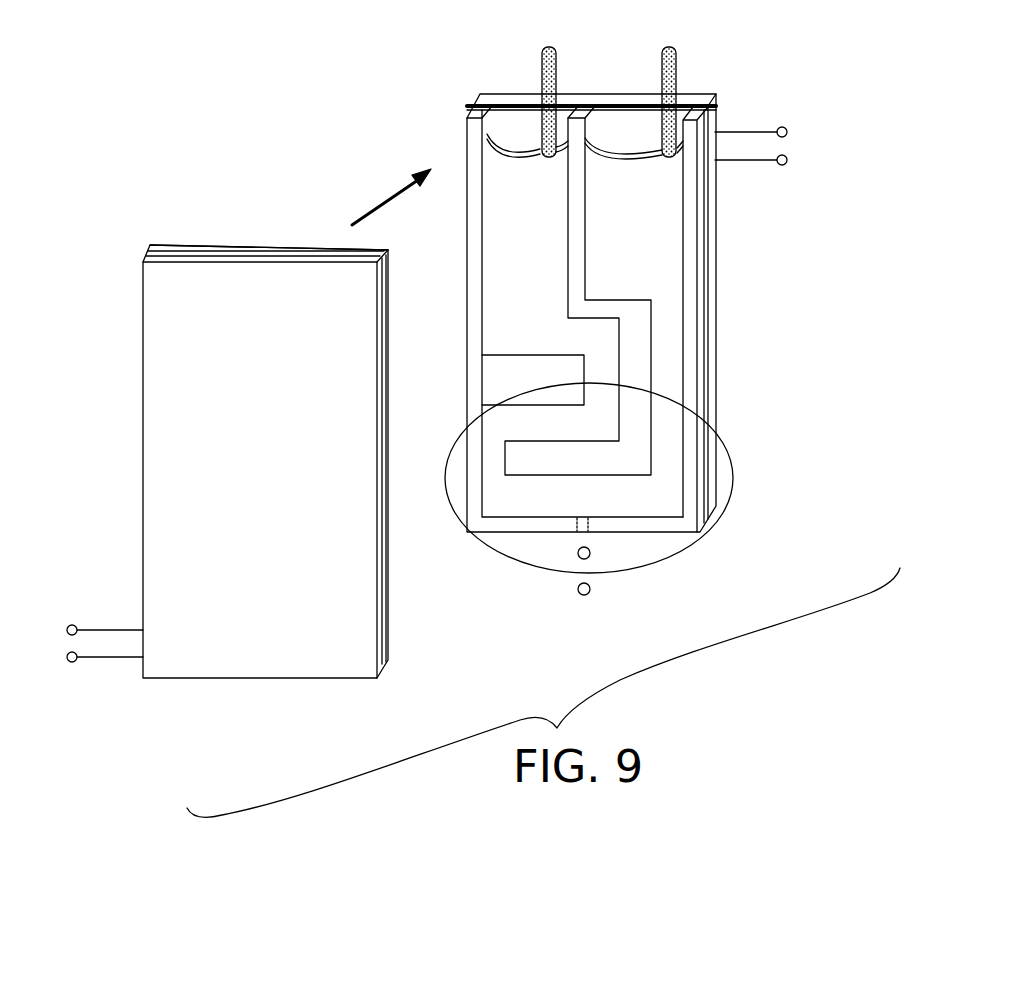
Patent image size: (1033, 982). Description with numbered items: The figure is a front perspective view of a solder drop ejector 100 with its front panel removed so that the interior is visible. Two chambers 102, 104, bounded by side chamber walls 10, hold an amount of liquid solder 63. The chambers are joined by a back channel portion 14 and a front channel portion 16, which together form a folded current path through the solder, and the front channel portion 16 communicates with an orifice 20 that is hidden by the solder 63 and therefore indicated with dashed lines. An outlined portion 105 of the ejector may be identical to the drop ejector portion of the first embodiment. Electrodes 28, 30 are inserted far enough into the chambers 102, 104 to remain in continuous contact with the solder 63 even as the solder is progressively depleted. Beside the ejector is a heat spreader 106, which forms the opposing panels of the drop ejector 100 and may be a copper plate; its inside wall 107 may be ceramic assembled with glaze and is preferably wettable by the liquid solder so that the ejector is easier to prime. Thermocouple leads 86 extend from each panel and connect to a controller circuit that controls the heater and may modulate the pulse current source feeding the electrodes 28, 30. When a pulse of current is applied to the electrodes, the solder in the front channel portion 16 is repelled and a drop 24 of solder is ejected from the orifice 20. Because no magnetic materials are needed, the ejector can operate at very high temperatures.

The solder drop ejector 100 is at (297, 103).
The side chamber walls 10 is at (692, 305).
The back channel portion 14 is at (560, 428).
The front channel portion 16 is at (573, 495).
The orifice 20 is at (582, 533).
The drop 24 is at (577, 590).
The electrode 28 is at (540, 63).
The electrode 30 is at (678, 66).
The liquid solder 63 is at (629, 222).
The thermocouple leads 86 is at (117, 653).
The chamber 102 is at (505, 224).
The chamber 104 is at (672, 248).
The outlined portion 105 is at (733, 483).
The heat spreader 106 is at (150, 300).
The inside wall 107 is at (287, 247).